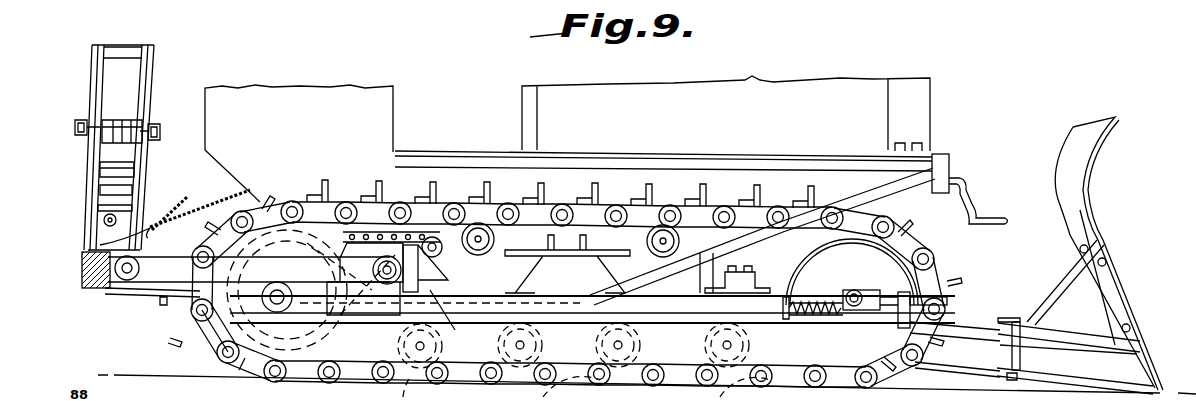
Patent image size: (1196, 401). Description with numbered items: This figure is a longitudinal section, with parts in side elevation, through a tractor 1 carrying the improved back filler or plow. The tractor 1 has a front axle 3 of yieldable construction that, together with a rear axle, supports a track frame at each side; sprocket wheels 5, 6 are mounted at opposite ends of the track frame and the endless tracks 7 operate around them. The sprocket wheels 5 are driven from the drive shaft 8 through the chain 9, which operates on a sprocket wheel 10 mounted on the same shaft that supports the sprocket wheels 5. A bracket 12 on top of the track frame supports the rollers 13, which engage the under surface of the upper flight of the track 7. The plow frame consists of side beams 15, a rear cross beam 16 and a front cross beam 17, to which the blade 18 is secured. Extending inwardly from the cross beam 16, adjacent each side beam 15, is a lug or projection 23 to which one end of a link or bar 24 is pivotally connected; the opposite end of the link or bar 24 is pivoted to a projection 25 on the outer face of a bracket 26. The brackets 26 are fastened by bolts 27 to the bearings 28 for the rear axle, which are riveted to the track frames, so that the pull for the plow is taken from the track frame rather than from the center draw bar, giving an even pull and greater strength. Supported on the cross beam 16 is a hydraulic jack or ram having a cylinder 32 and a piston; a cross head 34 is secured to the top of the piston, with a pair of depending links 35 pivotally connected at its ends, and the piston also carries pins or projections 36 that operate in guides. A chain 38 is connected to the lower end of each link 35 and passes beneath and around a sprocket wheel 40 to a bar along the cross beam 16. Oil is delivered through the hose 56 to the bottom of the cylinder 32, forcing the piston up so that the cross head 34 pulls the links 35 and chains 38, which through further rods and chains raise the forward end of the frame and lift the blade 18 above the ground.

The tractor 1 is at (938, 160).
The front axle 3 is at (738, 285).
The sprocket wheels 5 is at (200, 312).
The sprocket wheels 6 is at (875, 270).
The endless tracks 7 is at (660, 308).
The drive shaft 8 is at (436, 237).
The chain 9 is at (380, 231).
The sprocket wheel 10 is at (300, 250).
The bracket 12 is at (540, 273).
The rollers 13 is at (484, 226).
The side beams 15 is at (965, 340).
The rear cross beam 16 is at (90, 268).
The front cross beam 17 is at (1052, 323).
The blade 18 is at (1090, 203).
The lug or projection 23 is at (100, 290).
The link or bar 24 is at (150, 293).
The projection 25 is at (438, 272).
The bracket 26 is at (317, 255).
The bolts 27 is at (449, 287).
The bearings 28 is at (455, 317).
The cylinder 32 is at (130, 192).
The cross head 34 is at (110, 133).
The links 35 is at (100, 183).
The pins or projections 36 is at (75, 127).
The chain 38 is at (95, 208).
The sprocket wheel 40 is at (103, 220).
The hose 56 is at (175, 217).